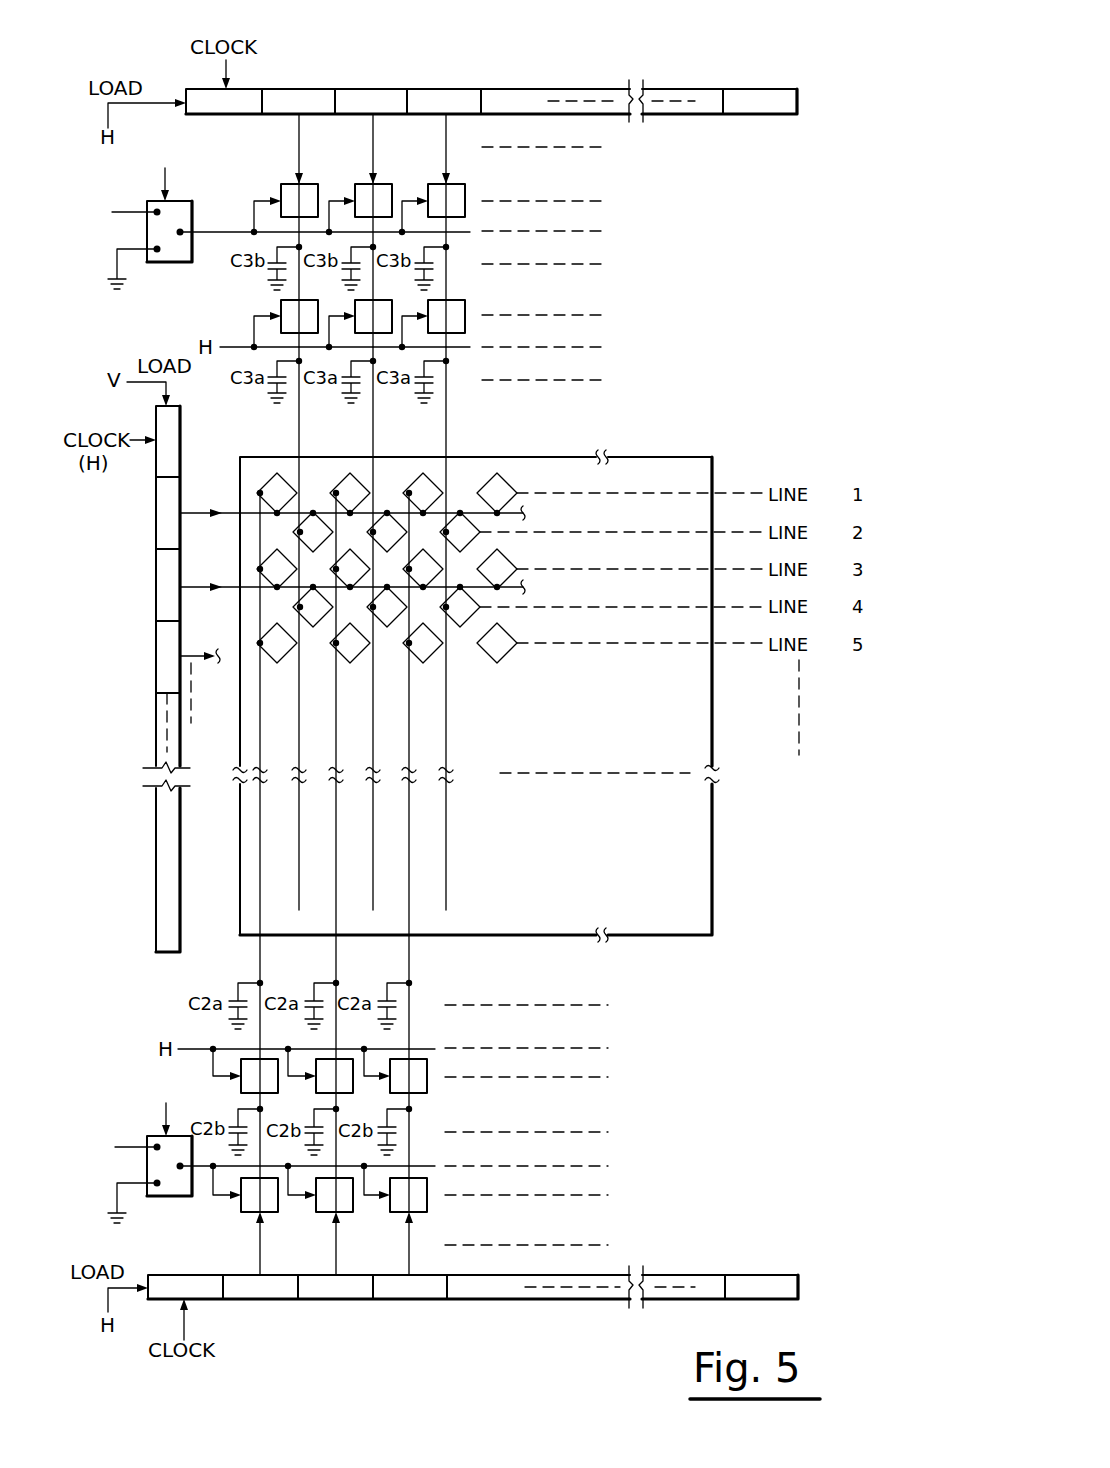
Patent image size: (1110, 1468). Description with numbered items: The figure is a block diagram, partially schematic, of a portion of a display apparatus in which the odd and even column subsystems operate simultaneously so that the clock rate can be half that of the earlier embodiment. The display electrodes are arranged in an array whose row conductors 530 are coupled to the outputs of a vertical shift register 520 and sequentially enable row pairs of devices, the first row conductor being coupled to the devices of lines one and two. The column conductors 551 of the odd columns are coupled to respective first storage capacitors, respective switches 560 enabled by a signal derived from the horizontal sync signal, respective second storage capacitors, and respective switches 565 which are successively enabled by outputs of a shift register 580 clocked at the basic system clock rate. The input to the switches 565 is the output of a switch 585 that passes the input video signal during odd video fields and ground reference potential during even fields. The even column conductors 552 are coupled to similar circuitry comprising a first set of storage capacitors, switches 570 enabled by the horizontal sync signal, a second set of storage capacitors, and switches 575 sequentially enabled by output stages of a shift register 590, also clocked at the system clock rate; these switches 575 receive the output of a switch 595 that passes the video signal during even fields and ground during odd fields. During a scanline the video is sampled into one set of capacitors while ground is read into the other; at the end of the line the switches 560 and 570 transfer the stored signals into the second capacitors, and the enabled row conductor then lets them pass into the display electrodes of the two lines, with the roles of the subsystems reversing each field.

The shift register 520 is at (155, 745).
The row conductors 530 is at (200, 513).
The column conductors of the odd columns 551 is at (409, 965).
The even column conductors 552 is at (446, 440).
The switches 560 is at (392, 1093).
The switches 565 is at (247, 1213).
The switches 570 is at (424, 306).
The switches 575 is at (428, 184).
The shift register 580 is at (508, 1300).
The switch 585 is at (170, 1197).
The shift register 590 is at (518, 93).
The switch 595 is at (170, 263).